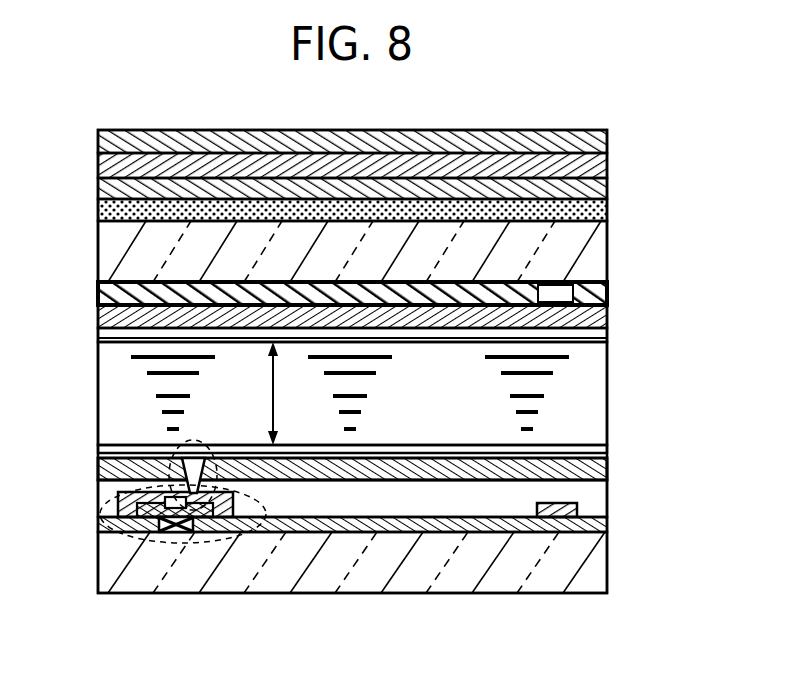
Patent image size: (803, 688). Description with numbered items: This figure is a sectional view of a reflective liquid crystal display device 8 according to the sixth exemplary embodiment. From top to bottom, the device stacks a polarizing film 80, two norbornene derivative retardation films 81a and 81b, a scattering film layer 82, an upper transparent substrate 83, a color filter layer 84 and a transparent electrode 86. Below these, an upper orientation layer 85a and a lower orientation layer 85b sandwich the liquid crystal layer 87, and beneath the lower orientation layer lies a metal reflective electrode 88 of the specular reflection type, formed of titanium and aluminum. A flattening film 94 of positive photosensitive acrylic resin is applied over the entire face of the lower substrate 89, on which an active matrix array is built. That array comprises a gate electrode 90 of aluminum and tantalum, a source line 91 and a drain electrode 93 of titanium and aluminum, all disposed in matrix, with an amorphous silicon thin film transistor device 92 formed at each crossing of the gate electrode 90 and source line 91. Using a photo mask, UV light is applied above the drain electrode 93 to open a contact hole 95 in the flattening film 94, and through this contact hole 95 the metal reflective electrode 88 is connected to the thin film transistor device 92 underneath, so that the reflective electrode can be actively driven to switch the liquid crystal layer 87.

The reflective liquid crystal display device 8 is at (732, 233).
The polarizing film 80 is at (598, 138).
The norbornene derivative retardation film 81a is at (594, 164).
The norbornene derivative retardation film 81b is at (597, 184).
The scattering film layer 82 is at (590, 206).
The upper transparent substrate 83 is at (590, 255).
The color filter layer 84 is at (601, 292).
The transparent electrode 86 is at (590, 314).
The orientation layer 85a is at (590, 333).
The liquid crystal layer 87 is at (590, 396).
The orientation layer 85b is at (595, 450).
The metal reflective electrode 88 is at (605, 468).
The flattening film 94 is at (593, 497).
The lower substrate 89 is at (590, 565).
The gate electrode 90 is at (153, 533).
The source line 91 is at (550, 518).
The thin film transistor device 92 is at (210, 537).
The drain electrode 93 is at (237, 535).
The contact hole 95 is at (170, 452).